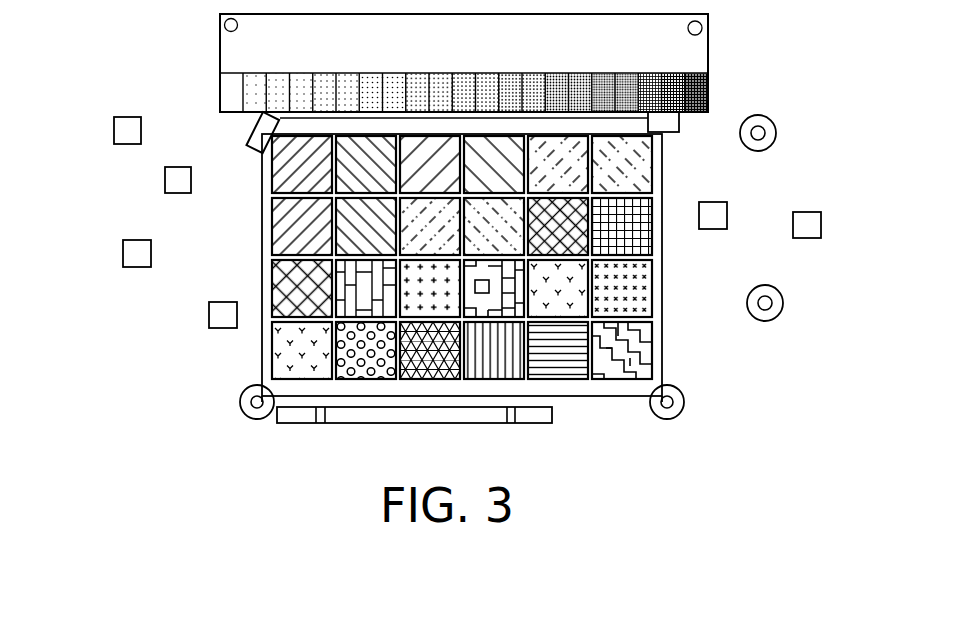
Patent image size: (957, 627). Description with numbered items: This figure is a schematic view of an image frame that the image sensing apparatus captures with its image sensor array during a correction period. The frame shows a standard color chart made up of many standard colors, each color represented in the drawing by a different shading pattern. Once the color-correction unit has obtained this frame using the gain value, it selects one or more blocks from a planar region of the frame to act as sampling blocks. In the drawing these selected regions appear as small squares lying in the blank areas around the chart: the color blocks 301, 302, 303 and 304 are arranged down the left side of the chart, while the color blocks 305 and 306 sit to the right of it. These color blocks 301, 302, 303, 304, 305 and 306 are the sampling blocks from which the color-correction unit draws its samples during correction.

The color block 301 is at (129, 126).
The color block 302 is at (170, 178).
The color block 303 is at (138, 257).
The color block 304 is at (215, 314).
The color block 305 is at (714, 209).
The color block 306 is at (809, 231).